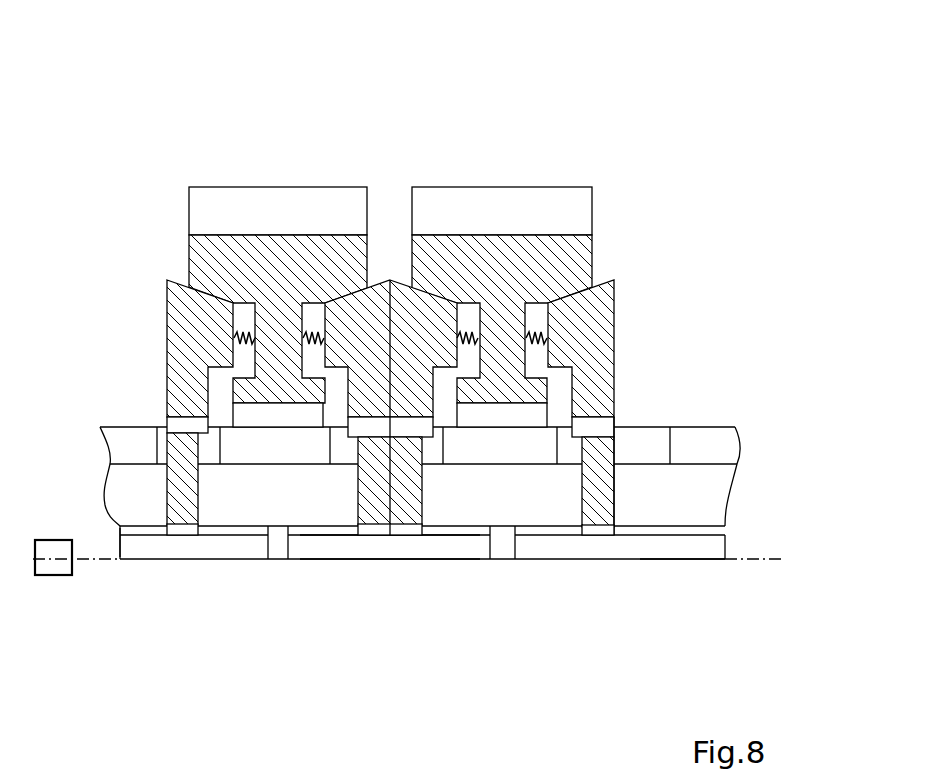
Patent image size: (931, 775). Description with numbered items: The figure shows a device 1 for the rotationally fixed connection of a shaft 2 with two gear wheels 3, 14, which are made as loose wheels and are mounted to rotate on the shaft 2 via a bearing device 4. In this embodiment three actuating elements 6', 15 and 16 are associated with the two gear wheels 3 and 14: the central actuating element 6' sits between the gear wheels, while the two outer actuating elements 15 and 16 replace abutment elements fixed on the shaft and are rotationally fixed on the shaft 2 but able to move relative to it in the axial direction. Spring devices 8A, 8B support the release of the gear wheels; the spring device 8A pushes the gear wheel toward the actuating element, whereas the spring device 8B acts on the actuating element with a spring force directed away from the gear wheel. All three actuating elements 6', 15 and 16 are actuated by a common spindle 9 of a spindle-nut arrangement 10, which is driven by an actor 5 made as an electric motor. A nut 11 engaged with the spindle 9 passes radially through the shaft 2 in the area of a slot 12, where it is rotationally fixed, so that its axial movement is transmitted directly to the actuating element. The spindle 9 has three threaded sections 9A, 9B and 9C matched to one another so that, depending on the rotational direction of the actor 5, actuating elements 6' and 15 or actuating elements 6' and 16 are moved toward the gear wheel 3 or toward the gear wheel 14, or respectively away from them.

The device 1 is at (331, 108).
The shaft 2 is at (130, 457).
The gear wheel 3 is at (238, 202).
The bearing device 4 is at (273, 415).
The actor 5 is at (60, 550).
The actuating element 6' is at (465, 330).
The spring device 8A is at (240, 345).
The spring device 8B is at (313, 343).
The spindle 9 is at (633, 563).
The threaded section 9A is at (138, 528).
The threaded section 9B is at (328, 543).
The threaded section 9C is at (705, 545).
The spindle-nut arrangement 10 is at (399, 548).
The nut 11 is at (407, 467).
The slot 12 is at (430, 448).
The gear wheel 14 is at (543, 207).
The actuating element 15 is at (168, 298).
The actuating element 16 is at (600, 312).